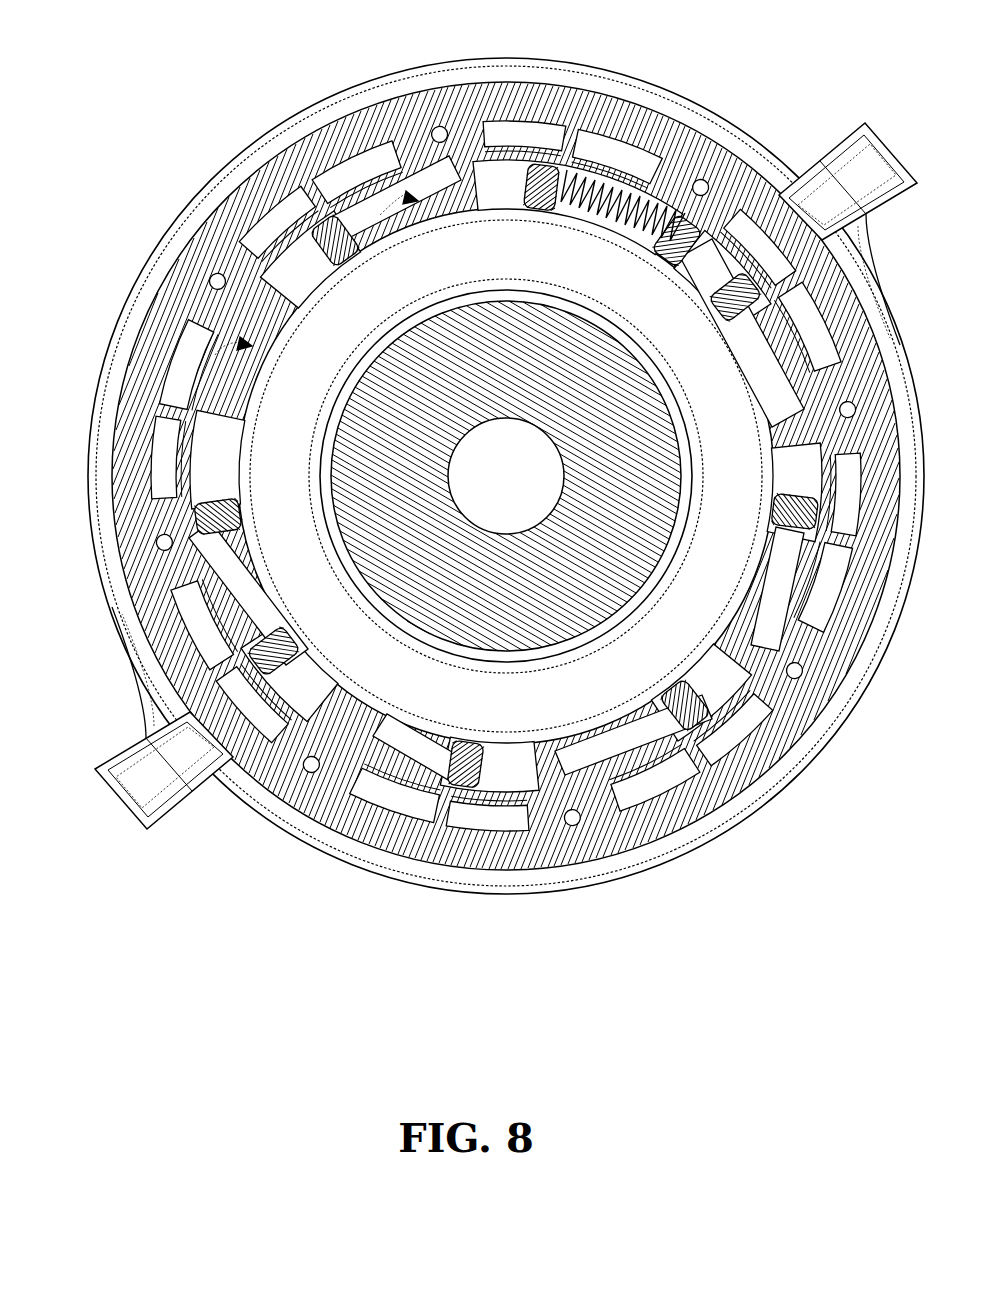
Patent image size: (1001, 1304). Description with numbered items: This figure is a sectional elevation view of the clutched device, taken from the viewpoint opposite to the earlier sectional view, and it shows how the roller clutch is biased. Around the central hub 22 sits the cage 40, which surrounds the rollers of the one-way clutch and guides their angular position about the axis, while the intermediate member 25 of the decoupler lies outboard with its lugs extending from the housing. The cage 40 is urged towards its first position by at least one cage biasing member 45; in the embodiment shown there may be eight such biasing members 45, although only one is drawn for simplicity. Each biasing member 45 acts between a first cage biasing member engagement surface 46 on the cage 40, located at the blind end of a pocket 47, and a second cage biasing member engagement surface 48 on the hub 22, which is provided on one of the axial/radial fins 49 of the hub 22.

The hub 22 is at (484, 263).
The intermediate member 25 is at (776, 150).
The cage 40 is at (478, 100).
The cage biasing member 45 is at (612, 185).
The first cage biasing member engagement surface 46 is at (455, 202).
The pocket 47 is at (406, 192).
The second cage biasing member engagement surface 48 is at (590, 125).
The axial/radial fin 49 is at (519, 122).